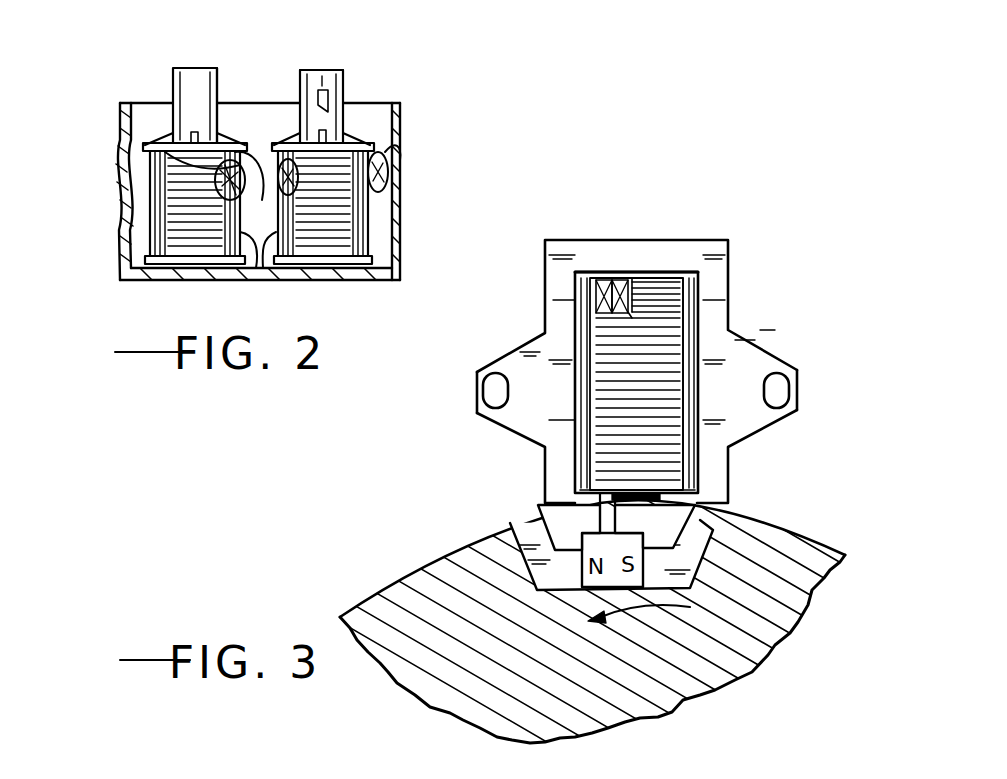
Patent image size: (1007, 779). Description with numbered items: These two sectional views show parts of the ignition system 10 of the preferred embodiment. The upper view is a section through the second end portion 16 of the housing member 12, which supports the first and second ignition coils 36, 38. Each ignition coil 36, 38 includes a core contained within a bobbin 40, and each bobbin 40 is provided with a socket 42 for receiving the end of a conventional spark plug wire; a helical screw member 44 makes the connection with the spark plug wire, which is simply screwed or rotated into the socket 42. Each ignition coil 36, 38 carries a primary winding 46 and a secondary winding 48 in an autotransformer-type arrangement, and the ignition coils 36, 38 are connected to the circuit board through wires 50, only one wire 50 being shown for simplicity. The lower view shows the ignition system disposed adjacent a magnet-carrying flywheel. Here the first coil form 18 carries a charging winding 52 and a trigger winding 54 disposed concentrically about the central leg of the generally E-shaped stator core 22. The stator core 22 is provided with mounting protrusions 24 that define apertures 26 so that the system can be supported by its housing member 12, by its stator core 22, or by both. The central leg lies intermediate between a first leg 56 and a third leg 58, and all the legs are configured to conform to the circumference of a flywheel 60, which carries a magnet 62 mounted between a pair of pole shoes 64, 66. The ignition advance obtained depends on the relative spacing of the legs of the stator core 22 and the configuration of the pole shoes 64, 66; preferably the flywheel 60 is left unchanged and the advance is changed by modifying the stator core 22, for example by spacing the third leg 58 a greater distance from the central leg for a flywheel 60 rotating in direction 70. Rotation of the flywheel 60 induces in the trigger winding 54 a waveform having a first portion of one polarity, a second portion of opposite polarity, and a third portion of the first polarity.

In FIG. 3, the ignition system 10 is at (623, 323).
In FIG. 2, the housing member 12 is at (402, 108).
In FIG. 3, the housing member 12 is at (697, 297).
In FIG. 2, the second end portion 16 is at (402, 140).
In FIG. 3, the first coil form 18 is at (678, 268).
In FIG. 3, the E-shaped stator core 22 is at (721, 209).
In FIG. 3, the mounting protrusions 24 is at (757, 355).
In FIG. 3, the apertures 26 is at (778, 375).
In FIG. 2, the first ignition coil 36 is at (356, 76).
In FIG. 2, the second ignition coil 38 is at (215, 69).
In FIG. 2, the bobbin 40 is at (150, 131).
In FIG. 2, the socket 42 is at (186, 68).
In FIG. 2, the helical screw member 44 is at (318, 70).
In FIG. 2, the primary winding 46 is at (256, 271).
In FIG. 2, the secondary winding 48 is at (128, 187).
In FIG. 2, the wires 50 is at (261, 152).
In FIG. 3, the charging winding 52 is at (626, 276).
In FIG. 3, the trigger winding 54 is at (609, 276).
In FIG. 3, the first leg 56 is at (547, 475).
In FIG. 3, the third leg 58 is at (717, 474).
In FIG. 3, the flywheel 60 is at (430, 583).
In FIG. 3, the magnet 62 is at (655, 587).
In FIG. 3, the pole shoe 64 is at (513, 527).
In FIG. 3, the pole shoe 66 is at (722, 530).
In FIG. 3, the direction of rotation 70 is at (641, 608).